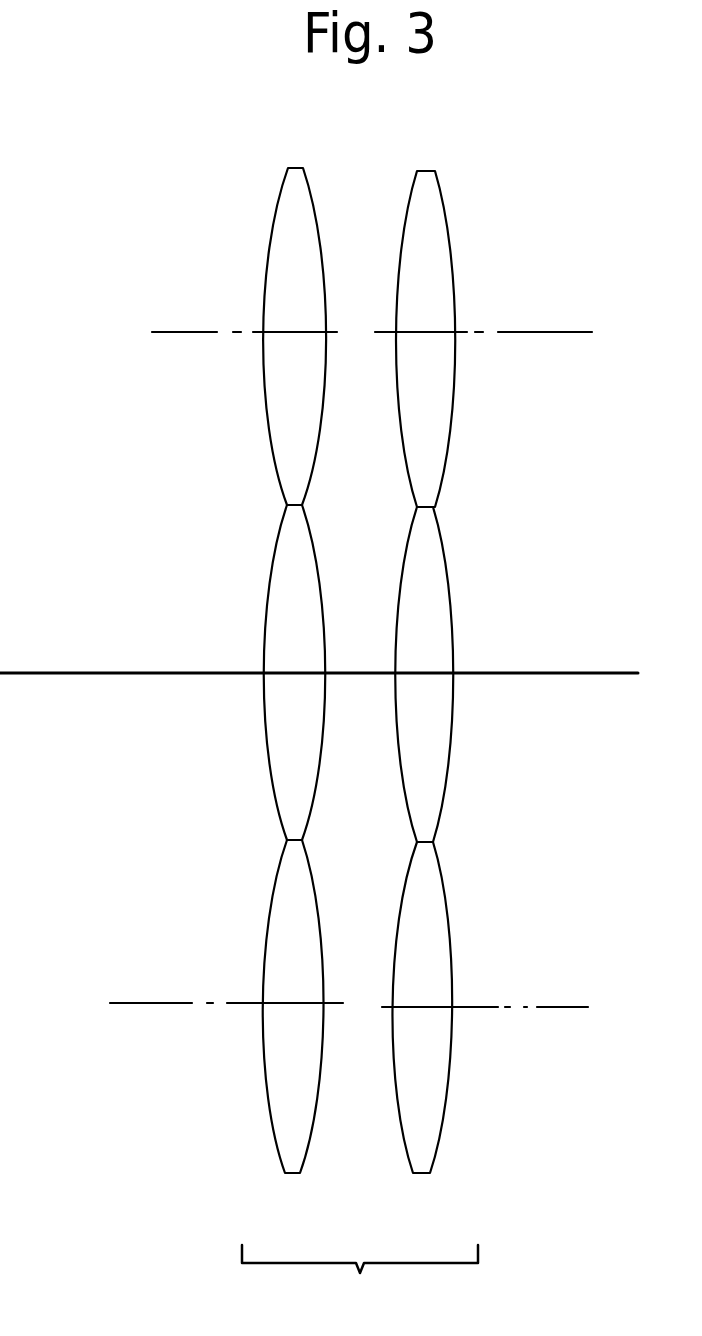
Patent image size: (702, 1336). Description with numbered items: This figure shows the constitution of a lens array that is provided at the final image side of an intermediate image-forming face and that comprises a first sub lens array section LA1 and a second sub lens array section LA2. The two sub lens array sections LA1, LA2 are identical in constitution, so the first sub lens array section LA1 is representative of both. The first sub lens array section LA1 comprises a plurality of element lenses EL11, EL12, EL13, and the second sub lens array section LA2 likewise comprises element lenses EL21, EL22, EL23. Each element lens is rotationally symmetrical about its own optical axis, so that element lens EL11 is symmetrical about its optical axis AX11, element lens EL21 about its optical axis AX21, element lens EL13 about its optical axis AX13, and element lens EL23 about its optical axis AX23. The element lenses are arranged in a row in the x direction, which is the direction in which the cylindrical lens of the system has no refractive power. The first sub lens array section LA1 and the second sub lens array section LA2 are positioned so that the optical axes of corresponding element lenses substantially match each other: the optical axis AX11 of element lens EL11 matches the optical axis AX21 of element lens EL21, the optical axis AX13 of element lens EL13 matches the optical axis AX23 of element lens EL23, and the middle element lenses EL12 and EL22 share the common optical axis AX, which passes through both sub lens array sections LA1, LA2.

The optical axis AX is at (155, 672).
The optical axis of element lens EL11 AX11 is at (216, 327).
The optical axis of element lens EL21 AX21 is at (565, 330).
The optical axis of element lens EL13 AX13 is at (173, 1002).
The optical axis of element lens EL23 AX23 is at (563, 1005).
The element lens EL11 is at (270, 240).
The element lens EL12 is at (267, 603).
The element lens EL13 is at (267, 923).
The element lens EL21 is at (450, 247).
The element lens EL22 is at (452, 583).
The element lens EL23 is at (448, 913).
The first sub lens array section LA1 is at (259, 699).
The second sub lens array section LA2 is at (467, 699).